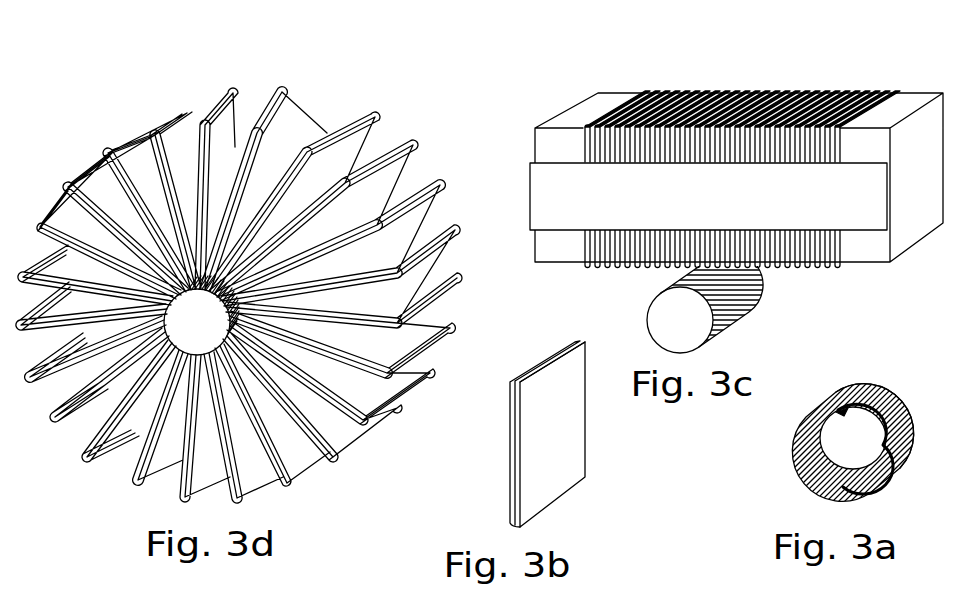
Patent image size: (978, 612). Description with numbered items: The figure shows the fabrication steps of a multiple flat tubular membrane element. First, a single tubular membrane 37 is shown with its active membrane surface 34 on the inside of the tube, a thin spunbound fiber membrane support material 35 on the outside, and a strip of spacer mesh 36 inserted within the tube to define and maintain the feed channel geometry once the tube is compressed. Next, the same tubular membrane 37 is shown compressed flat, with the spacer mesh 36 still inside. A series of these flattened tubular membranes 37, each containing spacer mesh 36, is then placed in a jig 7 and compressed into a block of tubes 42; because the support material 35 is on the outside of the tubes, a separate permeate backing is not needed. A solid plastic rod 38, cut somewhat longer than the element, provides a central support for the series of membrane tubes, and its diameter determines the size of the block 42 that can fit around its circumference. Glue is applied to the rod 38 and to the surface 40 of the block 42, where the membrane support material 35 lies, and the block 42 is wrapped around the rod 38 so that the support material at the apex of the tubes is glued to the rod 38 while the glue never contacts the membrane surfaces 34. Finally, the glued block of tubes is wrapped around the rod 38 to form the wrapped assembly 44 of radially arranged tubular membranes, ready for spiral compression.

In FIG. 3C, the jig 7 is at (910, 262).
In FIG. 3A, the membrane surface 34 is at (802, 480).
In FIG. 3A, the membrane support material 35 is at (835, 388).
In FIG. 3B, the spacer mesh 36 is at (512, 408).
In FIG. 3A, the spacer mesh 36 is at (857, 498).
In FIG. 3B, the tubular membrane 37 is at (538, 501).
In FIG. 3C, the solid rod 38 is at (653, 343).
In FIG. 3C, the surface of the block 40 is at (645, 272).
In FIG. 3C, the block of tubes 42 is at (720, 75).
In FIG. 3D, the radial fins 44 is at (238, 83).